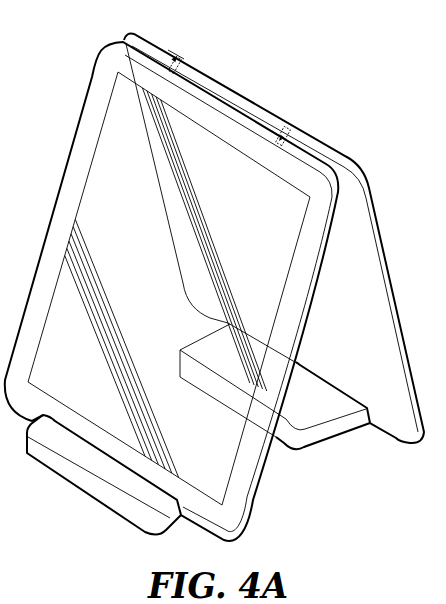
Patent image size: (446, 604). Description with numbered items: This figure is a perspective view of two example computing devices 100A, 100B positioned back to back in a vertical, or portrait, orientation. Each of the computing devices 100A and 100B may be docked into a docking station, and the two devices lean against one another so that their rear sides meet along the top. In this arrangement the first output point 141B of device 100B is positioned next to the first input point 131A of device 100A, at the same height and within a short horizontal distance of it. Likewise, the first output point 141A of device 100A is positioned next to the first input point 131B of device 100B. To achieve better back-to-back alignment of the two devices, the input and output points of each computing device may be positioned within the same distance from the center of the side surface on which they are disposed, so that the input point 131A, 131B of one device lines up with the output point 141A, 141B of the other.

The computing device 100A is at (252, 512).
The computing device 100B is at (394, 437).
The first input point 131A is at (174, 60).
The first input point 131B is at (283, 136).
The first output point 141A is at (278, 144).
The first output point 141B is at (181, 59).